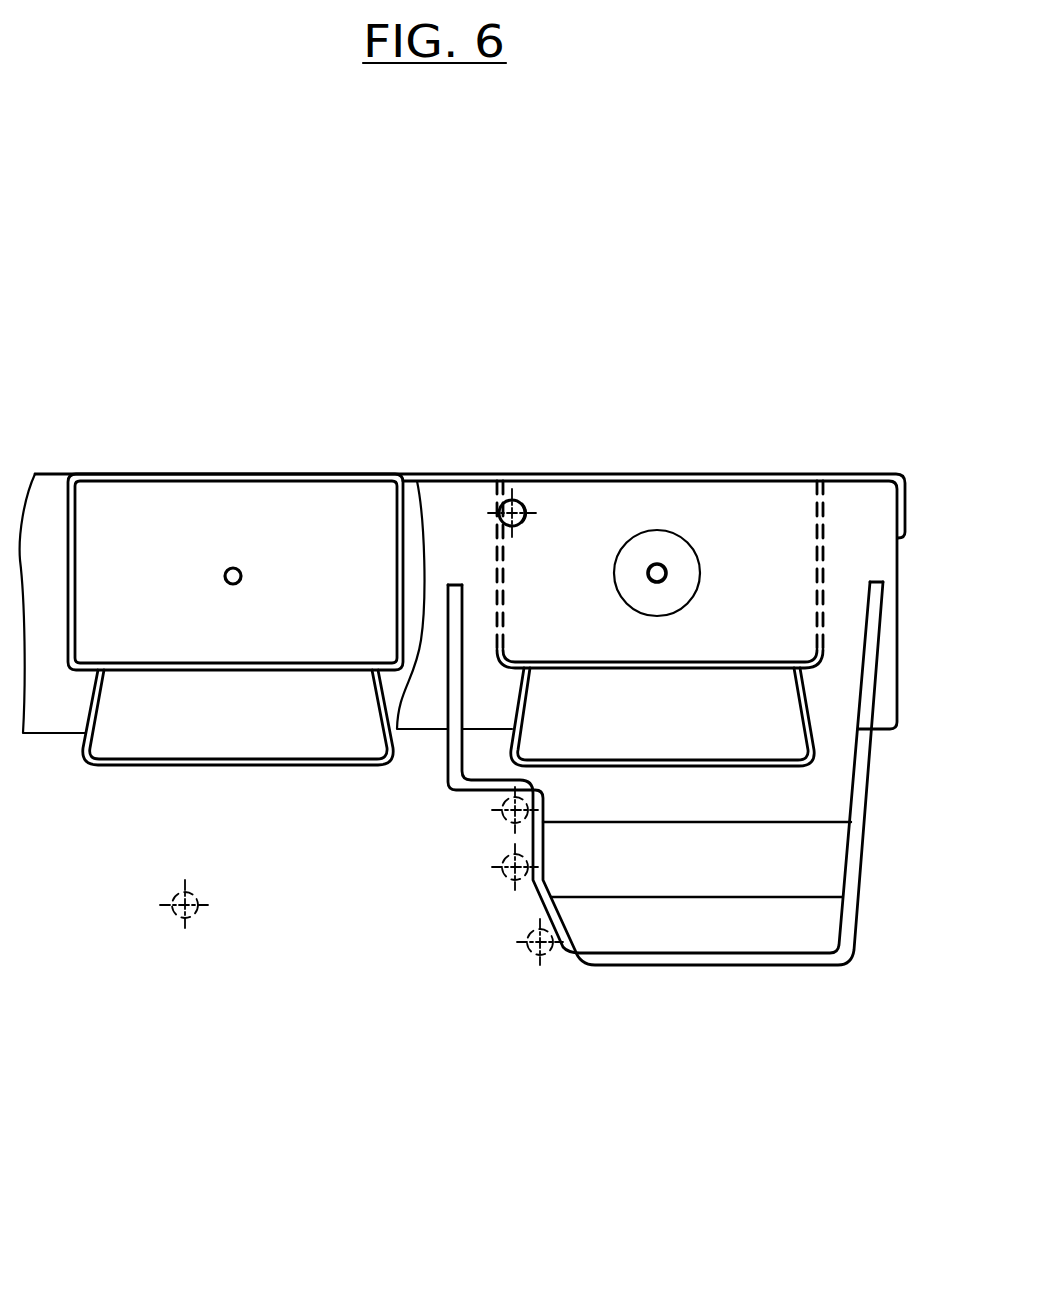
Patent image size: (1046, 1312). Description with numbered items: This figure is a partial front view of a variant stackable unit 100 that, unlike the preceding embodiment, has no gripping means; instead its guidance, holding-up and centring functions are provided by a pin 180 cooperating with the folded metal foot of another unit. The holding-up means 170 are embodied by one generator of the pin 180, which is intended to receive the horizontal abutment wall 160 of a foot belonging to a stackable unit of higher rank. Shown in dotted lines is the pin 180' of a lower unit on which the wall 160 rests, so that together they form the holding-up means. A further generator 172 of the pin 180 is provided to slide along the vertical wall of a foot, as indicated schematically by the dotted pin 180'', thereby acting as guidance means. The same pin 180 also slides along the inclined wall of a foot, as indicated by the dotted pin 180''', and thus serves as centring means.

The stackable unit 100 is at (247, 417).
The abutment wall 160 is at (483, 795).
The holding-up means 170 is at (511, 500).
The generator of the pin 172 is at (527, 513).
The pin 180 is at (632, 389).
The pin of a stackable unit of lower rank 180' is at (402, 940).
The pin sliding along the vertical wall 180'' is at (414, 1031).
The pin sliding along the inclined wall 180''' is at (525, 1044).